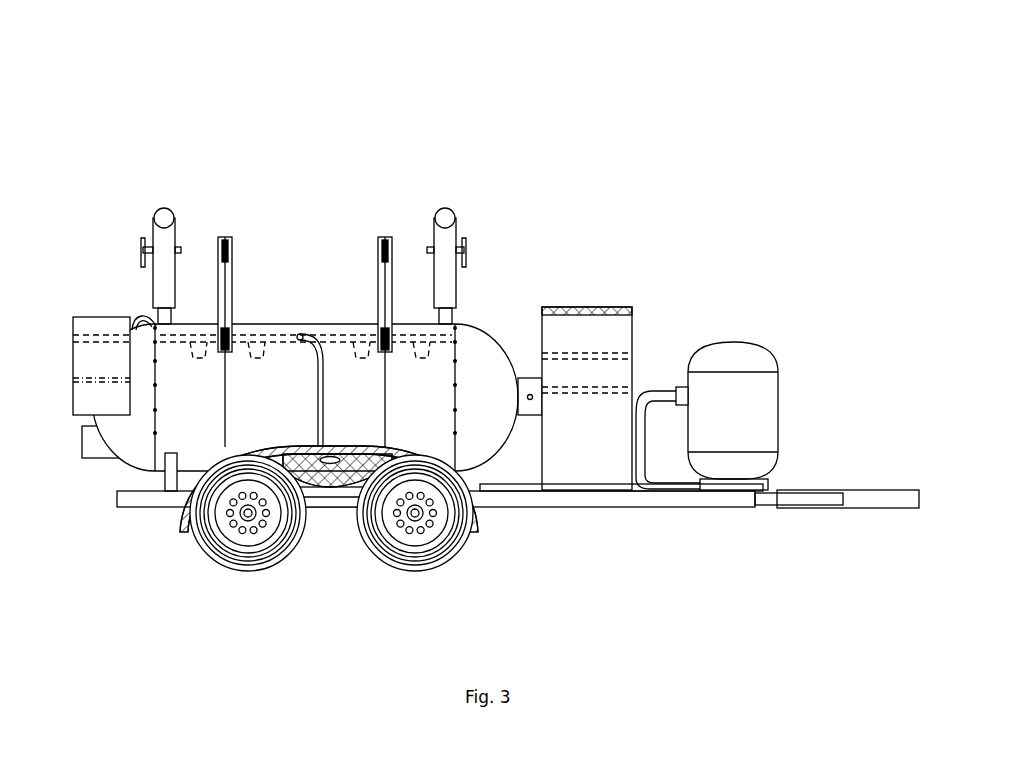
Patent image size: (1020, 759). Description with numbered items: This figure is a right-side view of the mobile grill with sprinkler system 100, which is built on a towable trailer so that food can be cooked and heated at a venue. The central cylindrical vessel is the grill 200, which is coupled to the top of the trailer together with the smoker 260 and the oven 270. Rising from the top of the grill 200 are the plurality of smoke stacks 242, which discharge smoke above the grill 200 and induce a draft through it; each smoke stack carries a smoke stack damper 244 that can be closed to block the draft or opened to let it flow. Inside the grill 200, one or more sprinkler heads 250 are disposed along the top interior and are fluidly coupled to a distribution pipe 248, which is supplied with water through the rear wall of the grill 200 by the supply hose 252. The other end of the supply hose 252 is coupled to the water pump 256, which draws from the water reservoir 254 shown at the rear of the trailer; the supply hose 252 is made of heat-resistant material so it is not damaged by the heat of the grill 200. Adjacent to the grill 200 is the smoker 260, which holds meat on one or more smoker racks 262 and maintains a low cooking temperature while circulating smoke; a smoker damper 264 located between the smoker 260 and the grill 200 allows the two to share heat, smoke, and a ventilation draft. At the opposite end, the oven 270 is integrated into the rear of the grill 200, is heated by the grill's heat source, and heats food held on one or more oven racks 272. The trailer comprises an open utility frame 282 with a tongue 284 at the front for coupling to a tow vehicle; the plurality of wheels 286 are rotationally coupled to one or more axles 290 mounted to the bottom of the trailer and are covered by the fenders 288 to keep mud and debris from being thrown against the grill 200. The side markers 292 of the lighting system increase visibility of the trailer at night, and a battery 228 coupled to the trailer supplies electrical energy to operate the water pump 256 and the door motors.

The mobile grill with sprinkler system 100 is at (88, 148).
The grill 200 is at (262, 323).
The battery 228 is at (318, 500).
The smoke stacks 242 is at (171, 212).
The smoke stack damper 244 is at (141, 251).
The distribution pipe 248 is at (282, 333).
The sprinkler heads 250 is at (200, 358).
The supply hose 252 is at (650, 472).
The water reservoir 254 is at (772, 394).
The water pump 256 is at (682, 386).
The smoker 260 is at (596, 307).
The smoker racks 262 is at (565, 352).
The smoker damper 264 is at (530, 400).
The oven 270 is at (80, 362).
The oven racks 272 is at (97, 380).
The frame 282 is at (718, 506).
The tongue 284 is at (908, 508).
The wheels 286 is at (248, 569).
The fenders 288 is at (178, 522).
The axles 290 is at (248, 515).
The side markers 292 is at (336, 480).